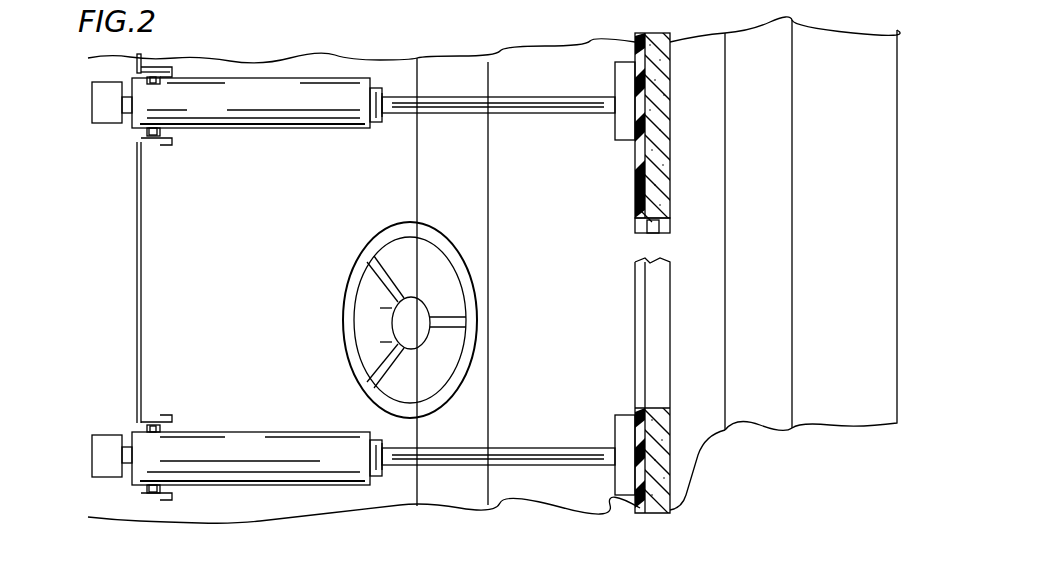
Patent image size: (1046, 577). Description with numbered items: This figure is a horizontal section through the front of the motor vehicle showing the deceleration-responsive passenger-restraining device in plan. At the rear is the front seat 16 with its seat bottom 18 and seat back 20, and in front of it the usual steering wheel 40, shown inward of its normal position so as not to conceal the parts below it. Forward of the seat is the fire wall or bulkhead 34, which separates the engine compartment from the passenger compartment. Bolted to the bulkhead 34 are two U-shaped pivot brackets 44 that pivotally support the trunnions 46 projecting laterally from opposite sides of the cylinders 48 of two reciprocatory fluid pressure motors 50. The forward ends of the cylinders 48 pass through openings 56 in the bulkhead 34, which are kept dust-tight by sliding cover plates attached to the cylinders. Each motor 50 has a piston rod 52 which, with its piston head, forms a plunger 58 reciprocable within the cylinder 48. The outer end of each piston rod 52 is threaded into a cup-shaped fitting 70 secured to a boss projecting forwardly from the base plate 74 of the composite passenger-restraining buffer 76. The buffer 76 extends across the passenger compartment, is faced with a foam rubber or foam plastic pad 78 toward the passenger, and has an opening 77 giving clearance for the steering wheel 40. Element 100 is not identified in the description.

The front seat 16 is at (790, 2).
The seat bottom 18 is at (508, 193).
The seat back 20 is at (880, 140).
The fire wall or bulkhead 34 is at (137, 250).
The steering wheel 40 is at (345, 293).
The U-shaped pivot brackets 44 is at (165, 145).
The trunnions 46 is at (165, 82).
The cylinders 48 is at (276, 126).
The reciprocatory fluid pressure motors 50 is at (366, 136).
The piston rods 52 is at (520, 99).
The openings 56 is at (137, 142).
The plungers 58 is at (394, 92).
The cup-shaped fitting 70 is at (625, 141).
The base plate 74 is at (642, 208).
The passenger-restraining buffer 76 is at (634, 196).
The opening 77 is at (660, 236).
The foam rubber or foam plastic pad 78 is at (670, 102).
The motor 100 is at (90, 100).